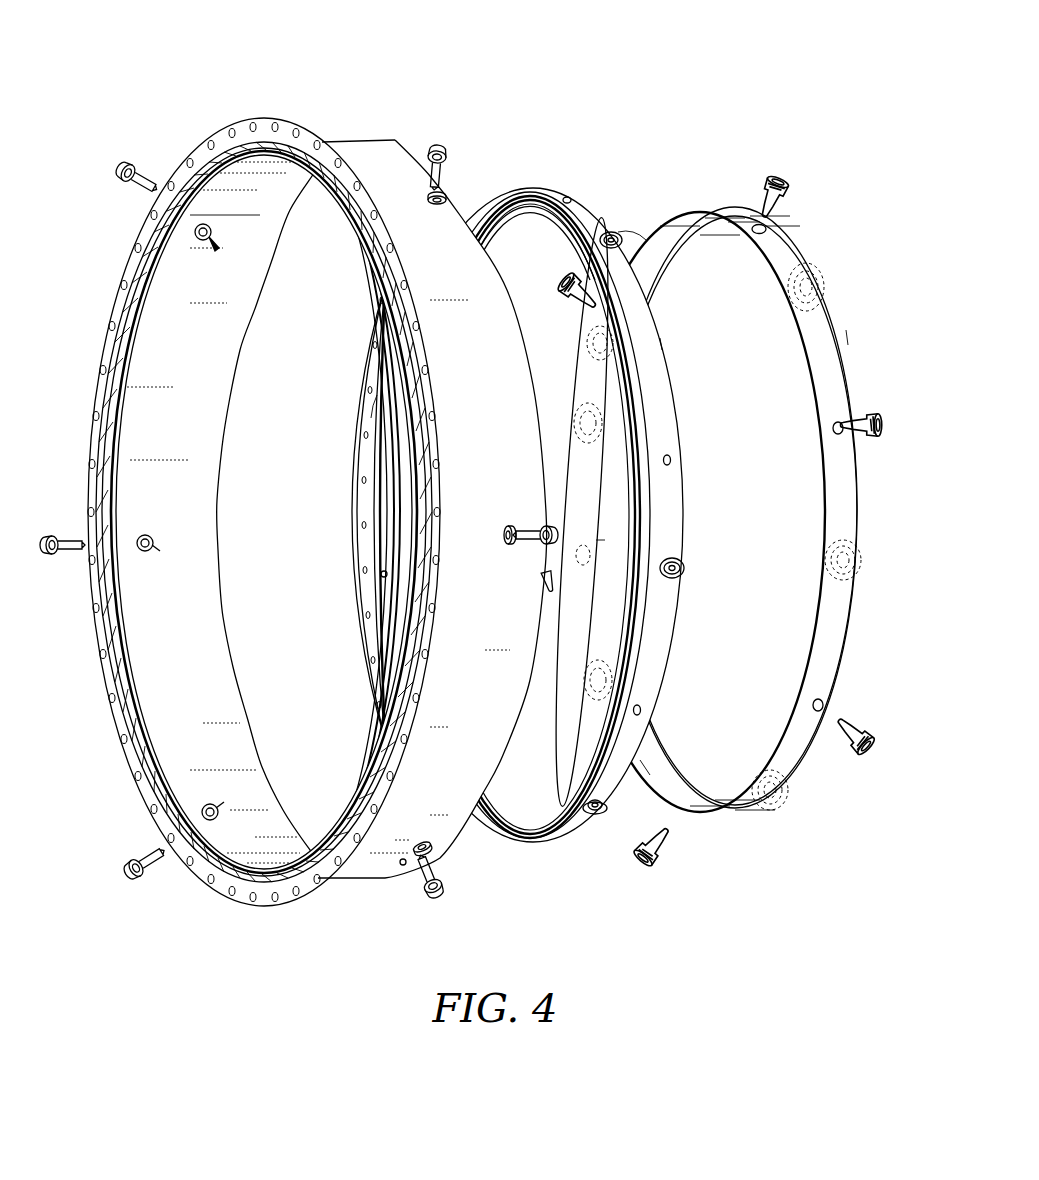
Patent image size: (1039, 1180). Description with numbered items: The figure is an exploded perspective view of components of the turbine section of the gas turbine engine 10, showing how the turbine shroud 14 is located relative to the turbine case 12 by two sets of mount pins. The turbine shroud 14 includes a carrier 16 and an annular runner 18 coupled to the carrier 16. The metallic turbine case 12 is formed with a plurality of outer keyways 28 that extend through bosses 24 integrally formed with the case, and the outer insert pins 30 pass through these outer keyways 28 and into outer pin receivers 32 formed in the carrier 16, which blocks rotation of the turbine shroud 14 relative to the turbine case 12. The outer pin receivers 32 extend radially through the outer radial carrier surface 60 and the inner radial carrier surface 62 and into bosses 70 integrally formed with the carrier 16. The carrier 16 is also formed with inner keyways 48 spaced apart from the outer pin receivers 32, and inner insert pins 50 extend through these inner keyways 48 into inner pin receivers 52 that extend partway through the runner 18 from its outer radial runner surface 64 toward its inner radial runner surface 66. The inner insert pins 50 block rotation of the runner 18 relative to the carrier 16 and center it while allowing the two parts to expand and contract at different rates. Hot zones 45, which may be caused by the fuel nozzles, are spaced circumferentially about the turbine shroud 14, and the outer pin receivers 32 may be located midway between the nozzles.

The gas turbine engine 10 is at (512, 104).
The turbine case 12 is at (359, 136).
The turbine shroud 14 is at (667, 128).
The carrier 16 is at (546, 153).
The runner 18 is at (712, 203).
The bosses 24 is at (445, 208).
The outer keyways 28 is at (212, 250).
The outer insert pins 30 is at (134, 163).
The outer pin receivers 32 is at (379, 570).
The hot zones 45 is at (825, 285).
The inner keyways 48 is at (569, 196).
The inner insert pins 50 is at (562, 294).
The inner pin receivers 52 is at (758, 222).
The outer radial carrier surface 60 is at (655, 337).
The inner radial carrier surface 62 is at (378, 407).
The outer radial runner surface 64 is at (845, 337).
The inner radial runner surface 66 is at (645, 760).
The bosses 70 is at (637, 236).